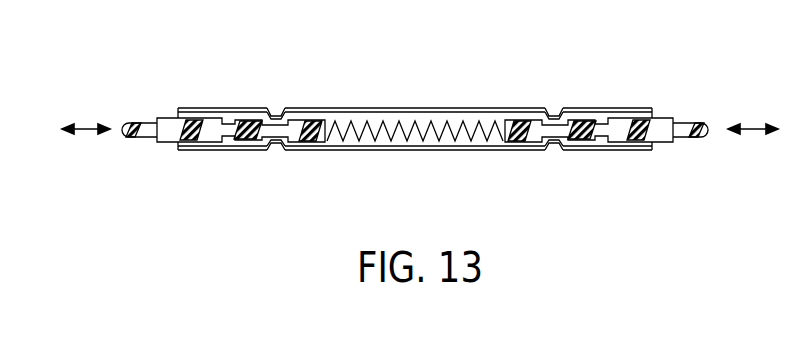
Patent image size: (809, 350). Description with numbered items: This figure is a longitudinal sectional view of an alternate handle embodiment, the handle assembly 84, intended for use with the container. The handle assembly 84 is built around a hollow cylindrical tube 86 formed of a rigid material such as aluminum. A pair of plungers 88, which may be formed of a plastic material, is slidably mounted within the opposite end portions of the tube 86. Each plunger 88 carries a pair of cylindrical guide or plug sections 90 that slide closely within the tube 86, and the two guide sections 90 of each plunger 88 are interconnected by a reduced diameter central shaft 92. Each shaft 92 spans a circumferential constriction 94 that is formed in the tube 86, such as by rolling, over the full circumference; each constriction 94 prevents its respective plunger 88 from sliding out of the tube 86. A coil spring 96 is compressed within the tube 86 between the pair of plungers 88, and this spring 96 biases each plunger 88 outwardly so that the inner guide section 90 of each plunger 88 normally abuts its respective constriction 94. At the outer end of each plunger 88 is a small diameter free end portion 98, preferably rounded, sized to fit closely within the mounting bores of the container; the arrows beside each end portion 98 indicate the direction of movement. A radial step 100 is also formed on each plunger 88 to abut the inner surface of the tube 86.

The handle assembly 84 is at (420, 117).
The hollow cylindrical tube 86 is at (383, 108).
The plunger 88 is at (187, 150).
The cylindrical guide section 90 is at (186, 118).
The reduced diameter central shaft 92 is at (250, 150).
The circumferential constriction 94 is at (278, 152).
The coil spring 96 is at (441, 146).
The free end portion 98 is at (120, 125).
The radial step 100 is at (152, 117).